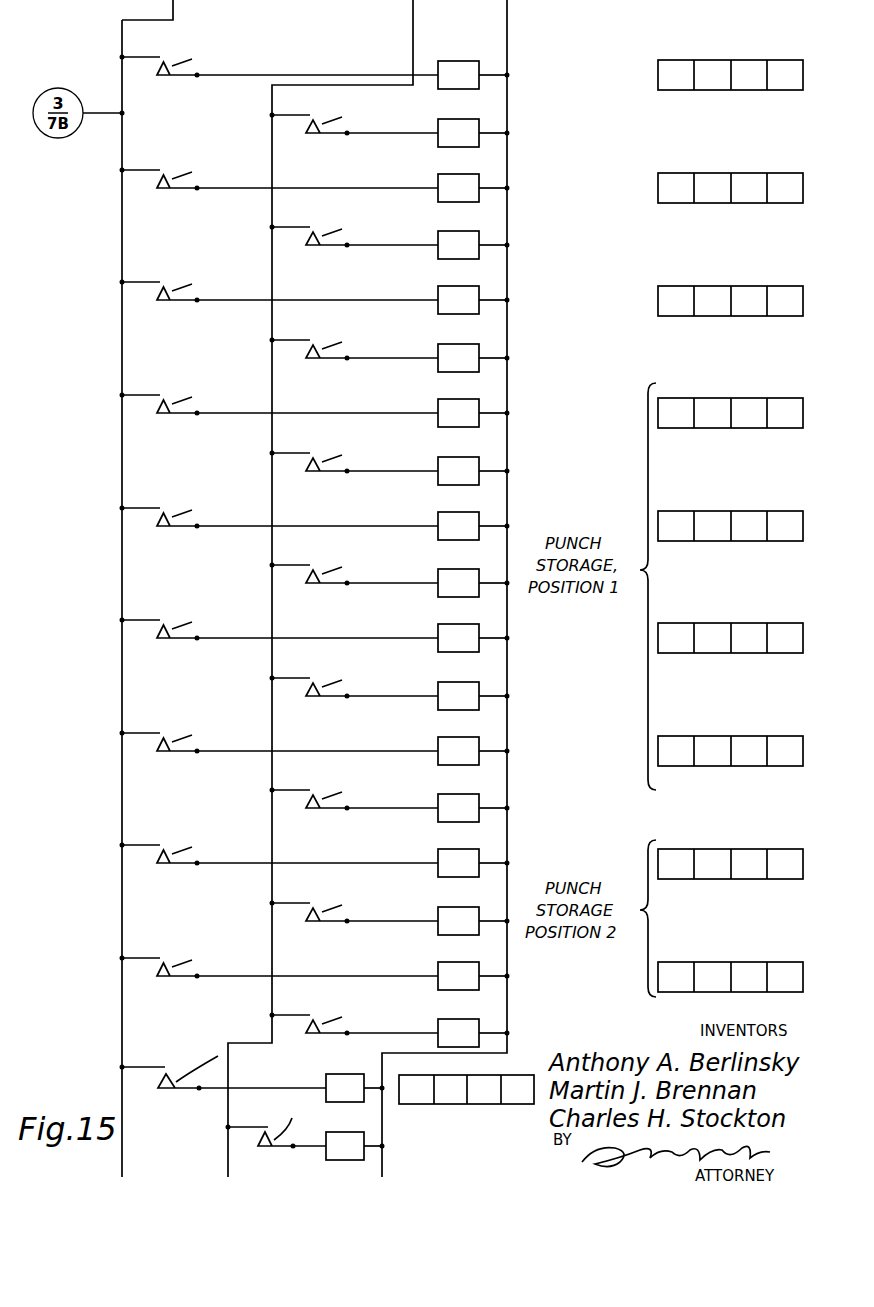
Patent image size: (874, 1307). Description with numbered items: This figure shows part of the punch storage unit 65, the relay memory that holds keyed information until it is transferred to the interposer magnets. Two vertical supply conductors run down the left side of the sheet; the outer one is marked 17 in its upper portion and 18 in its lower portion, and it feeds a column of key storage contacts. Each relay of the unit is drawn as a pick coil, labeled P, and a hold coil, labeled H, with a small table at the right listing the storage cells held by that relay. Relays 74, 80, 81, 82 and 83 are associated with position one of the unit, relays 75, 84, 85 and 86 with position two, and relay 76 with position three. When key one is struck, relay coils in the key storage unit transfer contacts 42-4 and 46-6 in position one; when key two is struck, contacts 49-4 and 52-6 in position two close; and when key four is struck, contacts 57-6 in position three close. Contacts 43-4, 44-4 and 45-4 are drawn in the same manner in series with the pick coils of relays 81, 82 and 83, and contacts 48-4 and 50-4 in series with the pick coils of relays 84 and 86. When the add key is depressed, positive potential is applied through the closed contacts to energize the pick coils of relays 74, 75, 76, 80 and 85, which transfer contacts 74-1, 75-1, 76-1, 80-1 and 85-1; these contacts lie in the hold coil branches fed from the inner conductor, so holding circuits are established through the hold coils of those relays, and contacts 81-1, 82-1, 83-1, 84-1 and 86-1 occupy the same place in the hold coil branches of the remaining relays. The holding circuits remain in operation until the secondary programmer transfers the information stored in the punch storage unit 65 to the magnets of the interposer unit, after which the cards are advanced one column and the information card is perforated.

The cable 17 is at (72, 310).
The cable 18 is at (72, 888).
The punch storage unit 65 is at (314, 588).
The punch storage relay 74 is at (620, 92).
The punch storage relay 75 is at (620, 205).
The punch storage relay 76 is at (620, 318).
The punch storage relay 80 is at (620, 430).
The punch storage relay 81 is at (620, 543).
The punch storage relay 82 is at (620, 655).
The punch storage relay 83 is at (620, 768).
The punch storage relay 84 is at (620, 881).
The punch storage relay 85 is at (620, 993).
The punch storage relay 86 is at (430, 1108).
The relay contacts 46-6 is at (279, 64).
The relay contacts 52-6 is at (279, 177).
The relay contacts 57-6 is at (279, 289).
The relay contacts 42-4 is at (279, 402).
The relay contact 43-4 is at (279, 515).
The relay contact 44-4 is at (279, 627).
The relay contact 45-4 is at (279, 740).
The relay contact 48-4 is at (279, 852).
The relay contacts 49-4 is at (279, 965).
The relay contact 50-4 is at (223, 1065).
The relay contacts 74-1 is at (354, 122).
The relay contacts 75-1 is at (354, 234).
The relay contacts 76-1 is at (354, 347).
The relay contacts 80-1 is at (354, 460).
The relay contact 81-1 is at (354, 572).
The relay contact 82-1 is at (354, 685).
The relay contact 83-1 is at (354, 797).
The relay contact 84-1 is at (354, 910).
The relay contacts 85-1 is at (354, 1022).
The relay contact 86-1 is at (276, 1124).